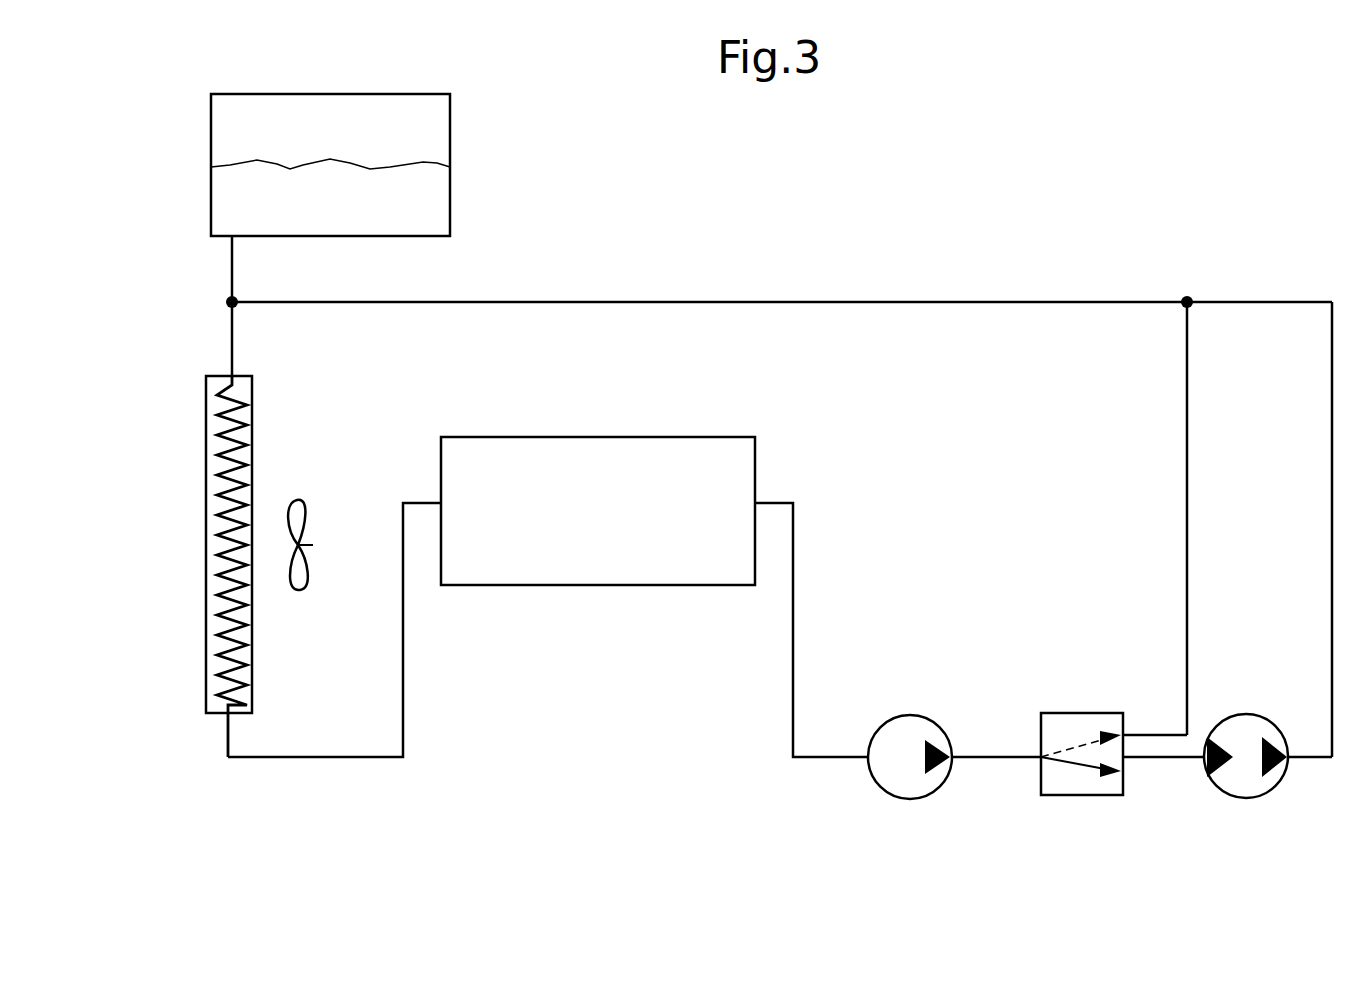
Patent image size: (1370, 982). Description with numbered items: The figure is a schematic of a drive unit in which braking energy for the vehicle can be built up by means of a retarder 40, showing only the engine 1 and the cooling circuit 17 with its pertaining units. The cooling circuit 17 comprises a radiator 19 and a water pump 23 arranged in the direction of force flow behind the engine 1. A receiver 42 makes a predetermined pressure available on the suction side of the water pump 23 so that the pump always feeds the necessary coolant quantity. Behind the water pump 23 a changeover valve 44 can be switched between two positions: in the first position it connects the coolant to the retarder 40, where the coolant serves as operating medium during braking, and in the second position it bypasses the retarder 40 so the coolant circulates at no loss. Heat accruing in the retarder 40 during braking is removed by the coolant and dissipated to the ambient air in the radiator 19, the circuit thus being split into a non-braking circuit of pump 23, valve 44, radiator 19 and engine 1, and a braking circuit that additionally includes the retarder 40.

The engine 1 is at (523, 540).
The cooling circuit 17 is at (765, 302).
The radiator 19 is at (222, 510).
The water pump 23 is at (910, 783).
The retarder 40 is at (1262, 785).
The receiver 42 is at (413, 213).
The changeover valve 44 is at (1063, 787).